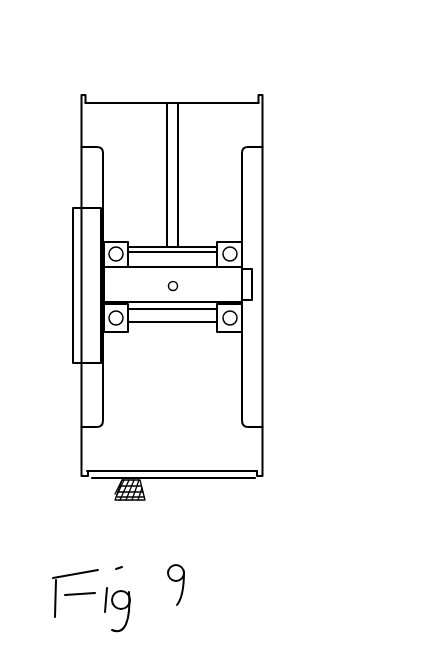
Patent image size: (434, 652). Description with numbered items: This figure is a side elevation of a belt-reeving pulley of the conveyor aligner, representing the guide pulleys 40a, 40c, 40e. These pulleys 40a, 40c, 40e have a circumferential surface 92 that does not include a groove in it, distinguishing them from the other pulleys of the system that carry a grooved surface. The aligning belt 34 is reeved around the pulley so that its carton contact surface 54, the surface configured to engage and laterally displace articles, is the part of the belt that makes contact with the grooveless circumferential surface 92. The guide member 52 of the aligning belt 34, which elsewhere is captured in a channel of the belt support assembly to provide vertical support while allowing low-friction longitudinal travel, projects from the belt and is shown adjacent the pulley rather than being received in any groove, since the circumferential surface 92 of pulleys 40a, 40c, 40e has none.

The circumferential surface 92 is at (132, 102).
The guide pulley 40a is at (246, 265).
The guide pulley 40c is at (246, 265).
The guide pulley 40e is at (263, 122).
The contact surface 54 is at (225, 471).
The aligning belt 34 is at (182, 479).
The guide member 52 is at (116, 496).